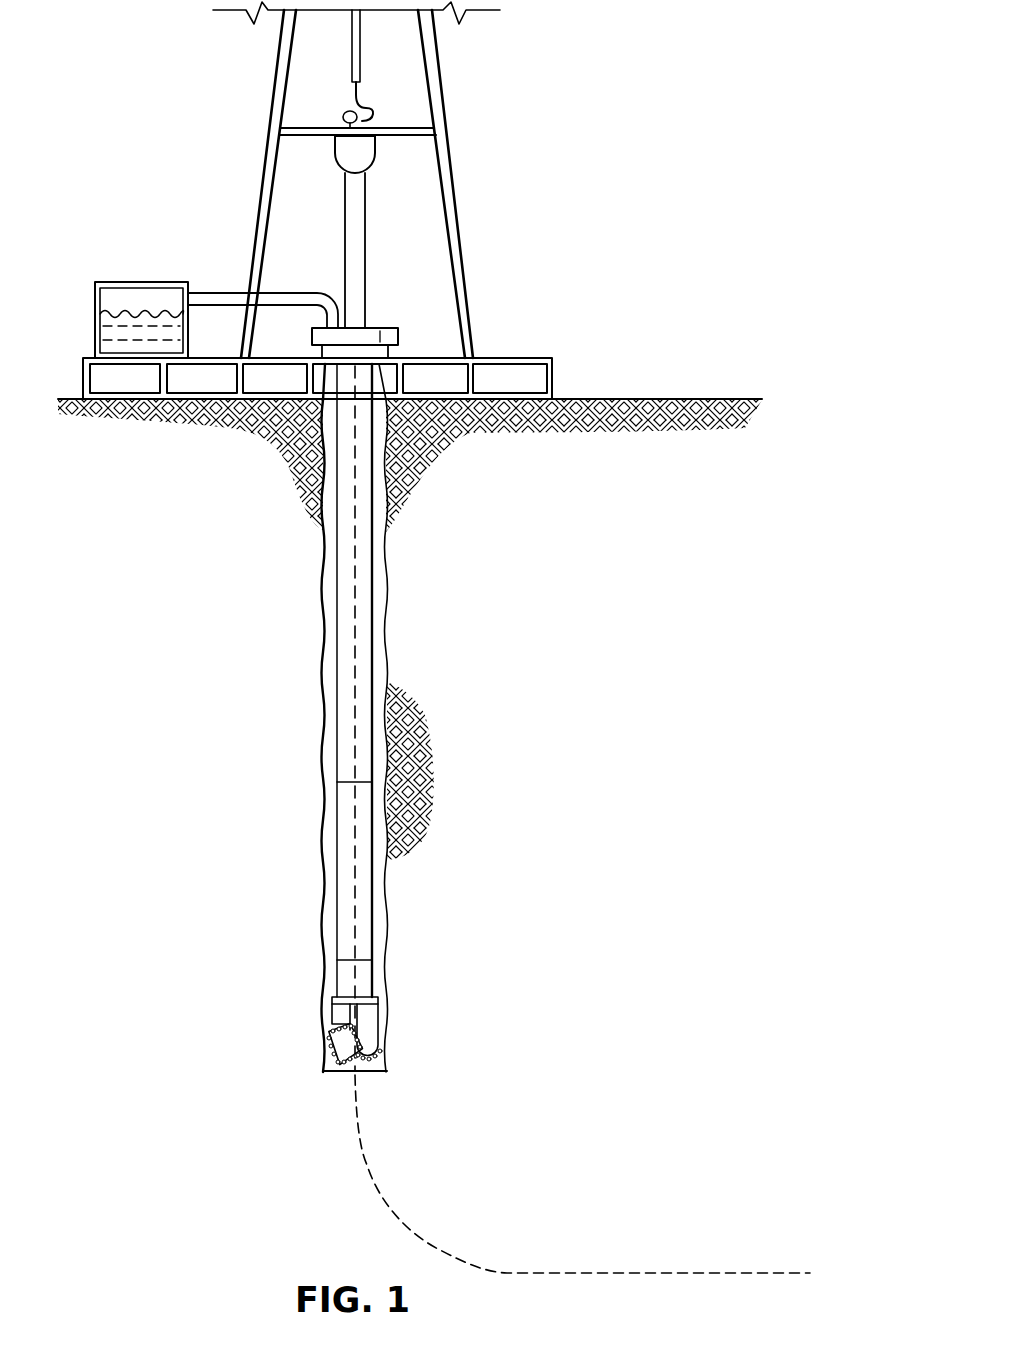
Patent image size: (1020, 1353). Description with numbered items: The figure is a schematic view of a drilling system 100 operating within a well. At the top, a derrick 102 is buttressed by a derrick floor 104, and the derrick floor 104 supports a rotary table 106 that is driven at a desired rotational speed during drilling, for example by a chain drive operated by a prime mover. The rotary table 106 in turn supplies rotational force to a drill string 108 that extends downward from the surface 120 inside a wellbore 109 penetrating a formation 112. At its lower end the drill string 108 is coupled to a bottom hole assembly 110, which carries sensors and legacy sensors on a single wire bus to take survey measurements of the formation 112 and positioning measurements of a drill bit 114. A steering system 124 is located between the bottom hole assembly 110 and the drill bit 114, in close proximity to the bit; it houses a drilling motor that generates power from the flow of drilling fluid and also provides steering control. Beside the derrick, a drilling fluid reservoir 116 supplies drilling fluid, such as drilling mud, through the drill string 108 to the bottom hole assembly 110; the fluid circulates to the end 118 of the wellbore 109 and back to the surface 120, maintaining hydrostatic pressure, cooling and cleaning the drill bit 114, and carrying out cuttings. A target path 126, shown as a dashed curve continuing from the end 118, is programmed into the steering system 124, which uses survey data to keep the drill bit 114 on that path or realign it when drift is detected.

The drilling system 100 is at (195, 159).
The derrick 102 is at (452, 213).
The derrick floor 104 is at (505, 358).
The rotary table 106 is at (385, 327).
The drill string 108 is at (345, 583).
The wellbore 109 is at (386, 625).
The bottom hole assembly 110 is at (345, 870).
The formation 112 is at (190, 603).
The drill bit 114 is at (372, 1033).
The drilling fluid reservoir 116 is at (142, 282).
The end of the wellbore 118 is at (337, 1075).
The surface 120 is at (640, 398).
The steering system 124 is at (345, 982).
The target path 126 is at (380, 1190).